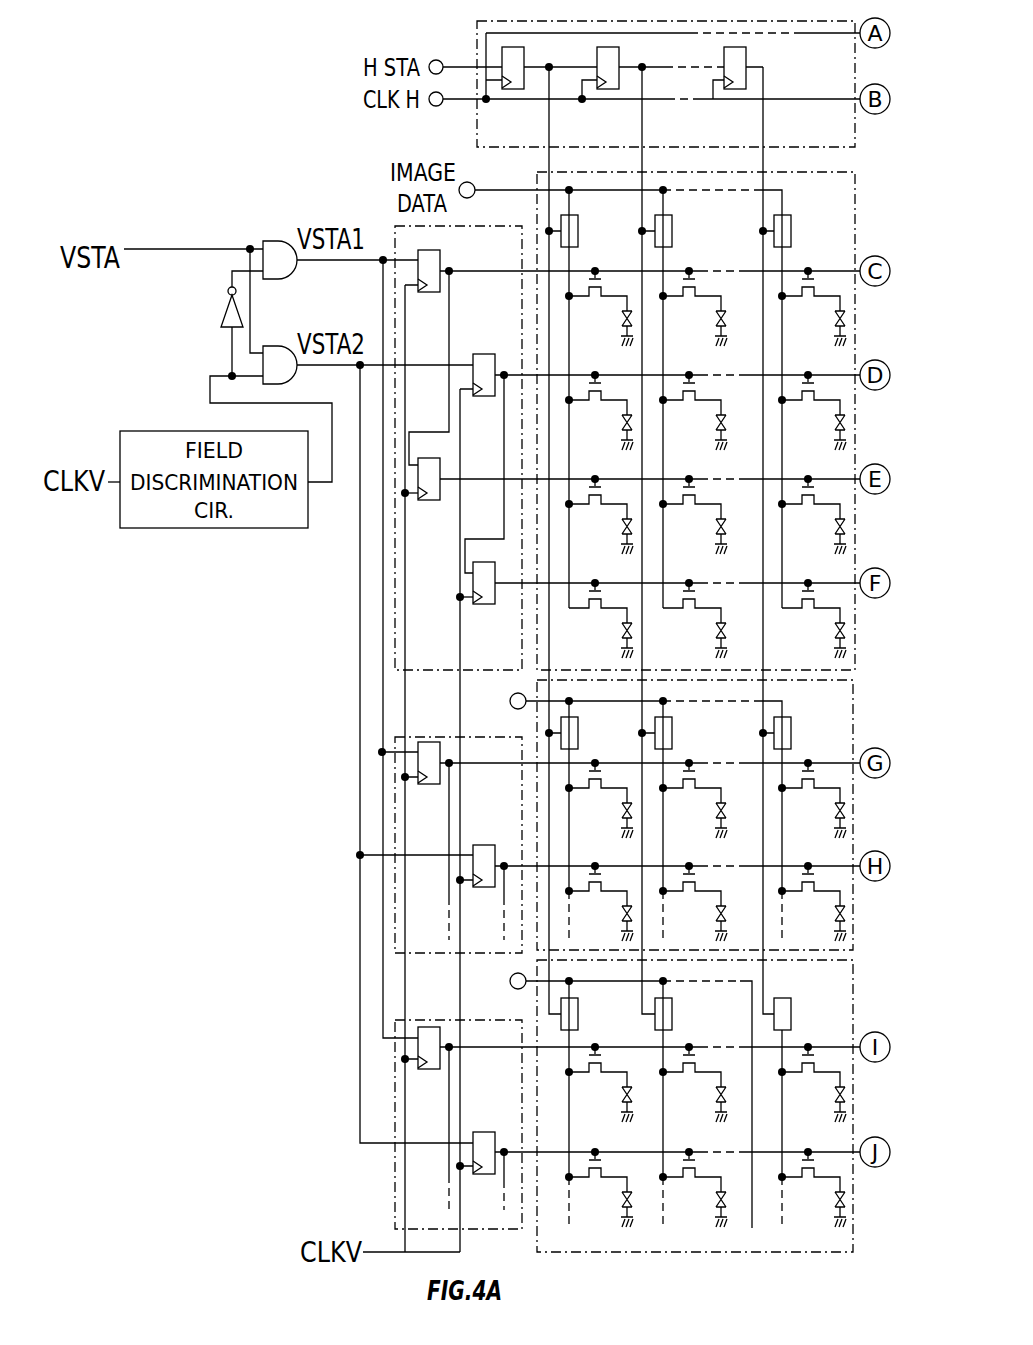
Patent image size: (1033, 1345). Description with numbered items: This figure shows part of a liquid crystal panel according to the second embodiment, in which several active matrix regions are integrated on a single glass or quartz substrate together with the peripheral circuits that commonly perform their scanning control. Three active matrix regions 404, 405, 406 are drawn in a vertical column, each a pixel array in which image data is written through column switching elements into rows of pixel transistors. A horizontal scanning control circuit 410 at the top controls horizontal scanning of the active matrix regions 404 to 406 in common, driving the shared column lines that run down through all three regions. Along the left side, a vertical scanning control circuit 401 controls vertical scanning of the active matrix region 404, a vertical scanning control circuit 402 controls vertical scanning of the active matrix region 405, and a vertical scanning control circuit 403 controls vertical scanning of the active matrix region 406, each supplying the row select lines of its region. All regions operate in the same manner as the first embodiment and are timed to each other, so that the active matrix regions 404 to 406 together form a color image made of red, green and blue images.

The vertical scanning control circuit 401 is at (417, 635).
The vertical scanning control circuit 402 is at (416, 835).
The vertical scanning control circuit 403 is at (415, 1117).
The active matrix region 404 is at (848, 199).
The active matrix region 405 is at (848, 708).
The active matrix region 406 is at (848, 988).
The horizontal scanning control circuit 410 is at (848, 142).